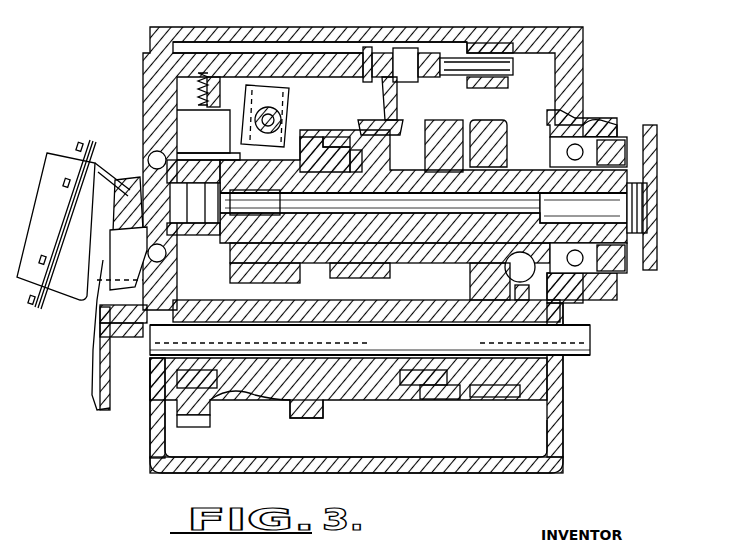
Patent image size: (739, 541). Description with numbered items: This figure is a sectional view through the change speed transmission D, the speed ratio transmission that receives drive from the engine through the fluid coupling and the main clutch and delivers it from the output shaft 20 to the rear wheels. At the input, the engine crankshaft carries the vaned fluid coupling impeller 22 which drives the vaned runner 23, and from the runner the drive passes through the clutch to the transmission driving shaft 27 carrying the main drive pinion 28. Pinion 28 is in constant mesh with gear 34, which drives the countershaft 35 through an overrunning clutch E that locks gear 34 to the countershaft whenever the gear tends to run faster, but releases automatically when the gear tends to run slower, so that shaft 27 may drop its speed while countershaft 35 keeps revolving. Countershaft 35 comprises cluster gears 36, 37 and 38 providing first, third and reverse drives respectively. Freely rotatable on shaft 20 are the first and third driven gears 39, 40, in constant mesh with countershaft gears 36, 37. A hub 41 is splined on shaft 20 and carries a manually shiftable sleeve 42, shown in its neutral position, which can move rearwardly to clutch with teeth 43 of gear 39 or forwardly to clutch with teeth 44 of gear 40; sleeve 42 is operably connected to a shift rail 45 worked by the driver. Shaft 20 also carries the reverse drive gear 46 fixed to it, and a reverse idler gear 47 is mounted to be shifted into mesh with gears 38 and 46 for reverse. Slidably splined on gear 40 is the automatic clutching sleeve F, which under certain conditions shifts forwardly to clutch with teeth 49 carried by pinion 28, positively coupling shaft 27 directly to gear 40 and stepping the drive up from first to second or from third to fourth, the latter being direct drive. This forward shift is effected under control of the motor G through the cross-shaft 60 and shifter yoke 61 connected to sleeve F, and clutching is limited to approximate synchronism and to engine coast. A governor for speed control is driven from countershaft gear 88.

The speed ratio transmission D is at (295, 34).
The shift rail 45 is at (317, 63).
The motor G is at (67, 160).
The transmission driving shaft 27 is at (133, 162).
The main drive pinion 28 is at (191, 153).
The teeth 49 is at (230, 153).
The cross-shaft 60 is at (266, 94).
The shifter yoke 61 is at (248, 125).
The automatic clutching sleeve F is at (297, 120).
The third driven gear 40 is at (317, 147).
The manually shiftable sleeve 42 is at (357, 137).
The teeth 44 is at (333, 137).
The teeth 43 is at (417, 120).
The first driven gear 39 is at (440, 120).
The reverse drive gear 46 is at (487, 120).
The hub 41 is at (423, 196).
The output shaft 20 is at (560, 223).
The fluid coupling impeller 22 is at (196, 206).
The runner 23 is at (255, 199).
The countershaft gear 88 is at (470, 343).
The reverse idler gear 47 is at (530, 303).
The gear 34 is at (190, 427).
The cluster gear 37 is at (300, 413).
The overrunning clutch E is at (243, 413).
The countershaft 35 is at (410, 370).
The cluster gear 36 is at (447, 390).
The cluster gear 38 is at (497, 380).